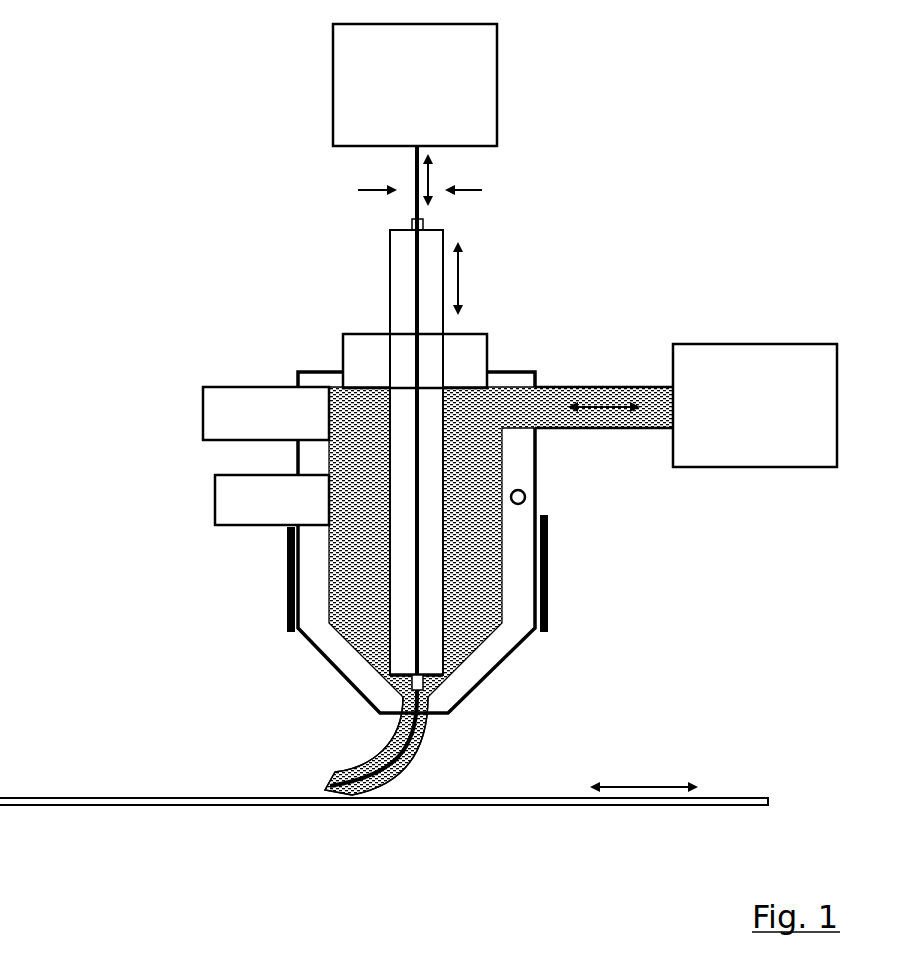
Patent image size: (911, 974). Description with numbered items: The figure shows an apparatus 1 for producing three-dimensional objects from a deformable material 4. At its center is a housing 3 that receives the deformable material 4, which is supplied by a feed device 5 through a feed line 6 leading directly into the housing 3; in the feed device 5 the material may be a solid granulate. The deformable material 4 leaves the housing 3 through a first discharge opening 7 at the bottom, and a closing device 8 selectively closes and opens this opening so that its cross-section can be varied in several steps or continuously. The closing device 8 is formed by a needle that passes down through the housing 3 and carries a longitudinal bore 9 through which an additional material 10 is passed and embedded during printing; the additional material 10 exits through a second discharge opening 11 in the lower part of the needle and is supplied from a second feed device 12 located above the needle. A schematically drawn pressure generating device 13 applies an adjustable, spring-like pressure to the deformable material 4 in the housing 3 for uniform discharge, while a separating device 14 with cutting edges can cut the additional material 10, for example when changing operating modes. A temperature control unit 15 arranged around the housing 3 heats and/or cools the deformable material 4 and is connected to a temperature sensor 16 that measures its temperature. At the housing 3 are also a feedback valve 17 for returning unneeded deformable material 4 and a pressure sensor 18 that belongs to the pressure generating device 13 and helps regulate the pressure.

The apparatus 1 is at (437, 409).
The housing 3 is at (312, 377).
The deformable material 4 is at (473, 438).
The feed device 5 is at (750, 344).
The feed line 6 is at (597, 385).
The first discharge opening 7 is at (380, 715).
The closing device 8 is at (390, 258).
The bore 9 is at (415, 312).
The additional material 10 is at (412, 212).
The second discharge opening 11 is at (395, 686).
The second feed device 12 is at (333, 85).
The pressure generating device 13 is at (467, 348).
The separating device 14 is at (358, 190).
The temperature control unit 15 is at (548, 607).
The temperature sensor 16 is at (526, 497).
The feedback valve 17 is at (203, 413).
The pressure sensor 18 is at (215, 500).